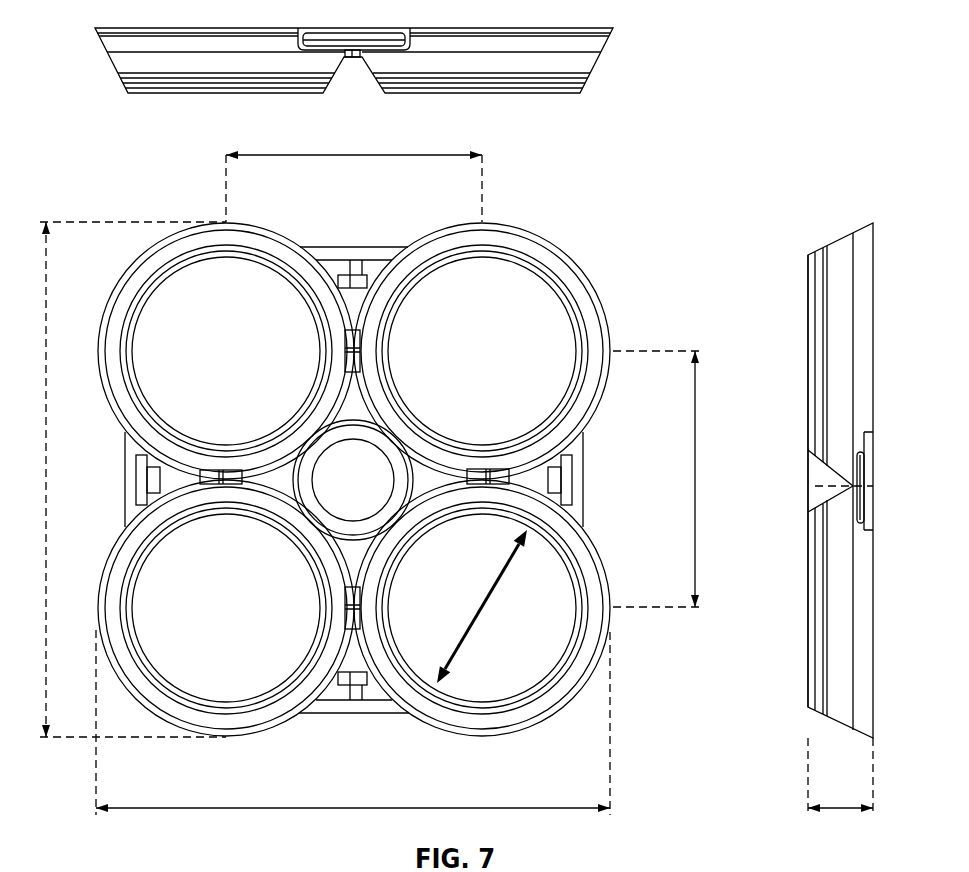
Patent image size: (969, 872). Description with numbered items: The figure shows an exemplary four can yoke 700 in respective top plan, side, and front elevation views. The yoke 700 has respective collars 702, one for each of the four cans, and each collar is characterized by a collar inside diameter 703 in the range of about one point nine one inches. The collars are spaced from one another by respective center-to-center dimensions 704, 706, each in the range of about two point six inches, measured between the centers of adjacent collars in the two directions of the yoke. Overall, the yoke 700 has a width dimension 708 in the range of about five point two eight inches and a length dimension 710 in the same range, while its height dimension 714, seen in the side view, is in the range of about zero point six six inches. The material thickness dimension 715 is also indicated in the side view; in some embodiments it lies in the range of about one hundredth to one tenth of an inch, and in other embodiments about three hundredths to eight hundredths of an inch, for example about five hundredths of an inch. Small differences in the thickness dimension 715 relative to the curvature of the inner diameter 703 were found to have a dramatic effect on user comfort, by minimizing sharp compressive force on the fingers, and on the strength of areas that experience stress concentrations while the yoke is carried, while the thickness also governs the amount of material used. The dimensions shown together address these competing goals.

The four can yoke 700 is at (100, 168).
The collar 702 is at (140, 258).
The collar inside diameter 703 is at (472, 632).
The center-to-center dimension 704 is at (695, 480).
The center-to-center dimension 706 is at (352, 157).
The width dimension 708 is at (355, 806).
The length dimension 710 is at (48, 470).
The height dimension 714 is at (860, 806).
The thickness dimension 715 is at (925, 478).